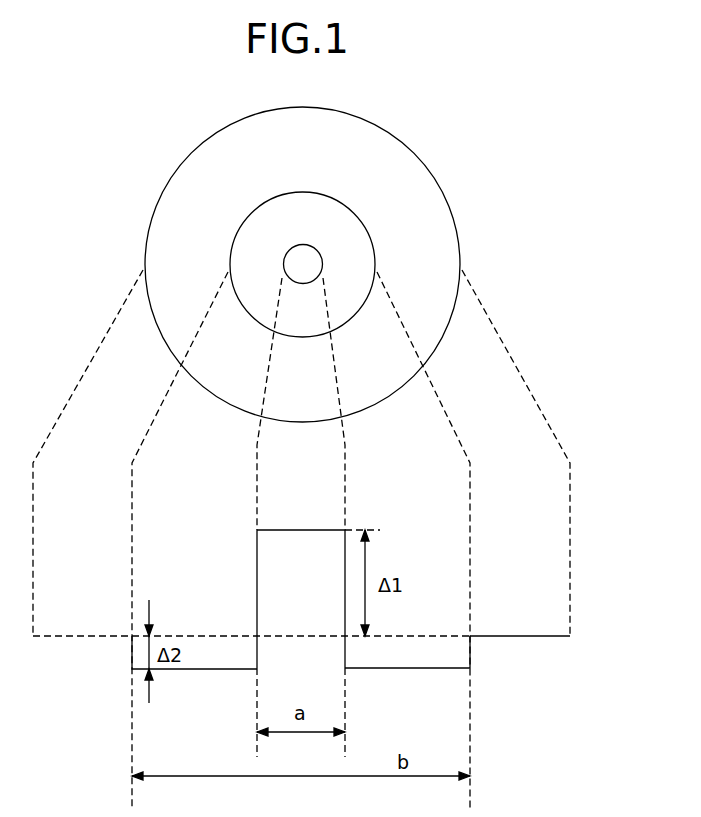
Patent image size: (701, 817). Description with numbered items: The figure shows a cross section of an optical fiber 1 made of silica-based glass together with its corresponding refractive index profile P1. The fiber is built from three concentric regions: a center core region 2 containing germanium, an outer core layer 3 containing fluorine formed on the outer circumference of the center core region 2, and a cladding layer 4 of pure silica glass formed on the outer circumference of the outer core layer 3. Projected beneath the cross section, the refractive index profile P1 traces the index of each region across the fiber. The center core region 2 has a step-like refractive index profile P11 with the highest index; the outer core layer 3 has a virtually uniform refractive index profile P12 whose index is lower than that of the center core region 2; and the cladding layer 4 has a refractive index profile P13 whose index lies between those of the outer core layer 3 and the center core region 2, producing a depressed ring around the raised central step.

The optical fiber 1 is at (325, 255).
The center core region 2 is at (293, 247).
The outer core layer 3 is at (240, 222).
The cladding layer 4 is at (163, 193).
The refractive index profile P1 is at (345, 539).
The step-like refractive index profile P11 is at (300, 530).
The virtually uniform refractive index profile P12 is at (442, 668).
The refractive index profile P13 is at (518, 636).